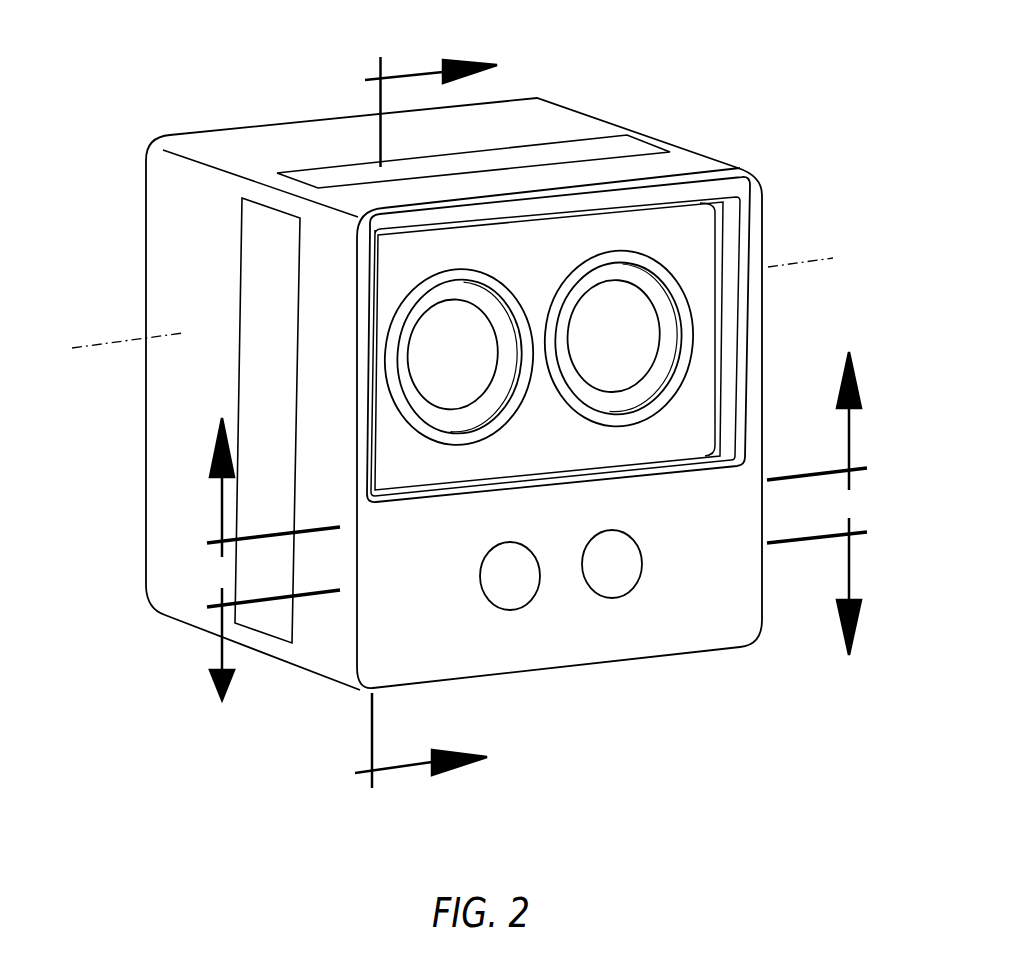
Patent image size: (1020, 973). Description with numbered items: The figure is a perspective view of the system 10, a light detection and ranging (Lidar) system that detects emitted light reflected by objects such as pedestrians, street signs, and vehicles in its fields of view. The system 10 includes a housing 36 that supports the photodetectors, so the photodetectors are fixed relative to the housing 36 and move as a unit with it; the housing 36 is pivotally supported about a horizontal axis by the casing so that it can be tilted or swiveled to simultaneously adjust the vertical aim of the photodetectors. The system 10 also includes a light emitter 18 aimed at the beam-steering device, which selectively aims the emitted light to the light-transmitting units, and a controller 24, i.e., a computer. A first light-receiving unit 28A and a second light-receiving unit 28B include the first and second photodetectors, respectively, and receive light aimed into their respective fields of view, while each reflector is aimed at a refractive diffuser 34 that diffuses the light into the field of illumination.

The system 10 is at (717, 66).
The light emitter 18 is at (174, 621).
The controller 24 is at (683, 398).
The first light-receiving unit 28A is at (405, 422).
The second light-receiving unit 28B is at (663, 402).
The refractive diffuser 34 is at (510, 610).
The housing 36 is at (530, 258).